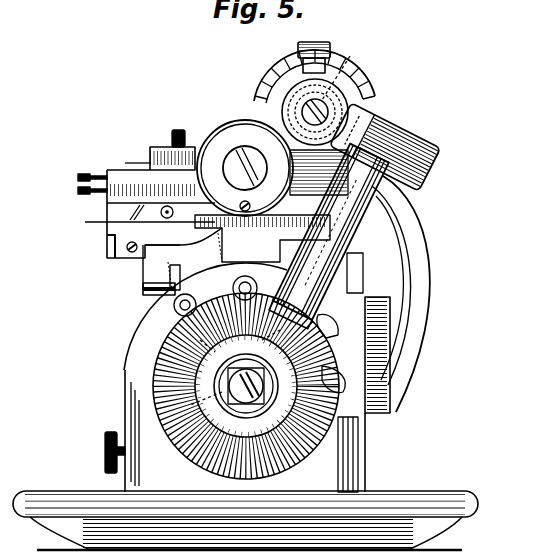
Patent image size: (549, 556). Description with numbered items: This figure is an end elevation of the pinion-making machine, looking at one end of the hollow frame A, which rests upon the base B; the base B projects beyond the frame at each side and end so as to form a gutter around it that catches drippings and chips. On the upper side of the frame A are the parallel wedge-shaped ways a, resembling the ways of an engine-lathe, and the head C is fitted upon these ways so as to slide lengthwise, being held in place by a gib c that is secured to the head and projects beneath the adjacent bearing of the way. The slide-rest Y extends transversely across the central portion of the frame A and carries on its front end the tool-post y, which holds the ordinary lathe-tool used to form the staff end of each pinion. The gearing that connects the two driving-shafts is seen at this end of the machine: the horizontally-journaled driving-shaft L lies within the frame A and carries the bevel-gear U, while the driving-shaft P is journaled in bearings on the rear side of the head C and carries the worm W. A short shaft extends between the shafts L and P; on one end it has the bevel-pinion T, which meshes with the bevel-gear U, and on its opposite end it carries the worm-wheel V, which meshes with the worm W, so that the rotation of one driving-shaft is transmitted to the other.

The frame A is at (268, 334).
The base B is at (245, 513).
The head C is at (271, 191).
The driving-shaft L is at (185, 458).
The driving-shaft P is at (341, 70).
The bevel-pinion T is at (326, 236).
The bevel-gear U is at (129, 452).
The worm-wheel V is at (396, 128).
The worm W is at (272, 78).
The slide-rest Y is at (146, 202).
The way a is at (182, 259).
The gib c is at (143, 289).
The tool-post y is at (156, 144).